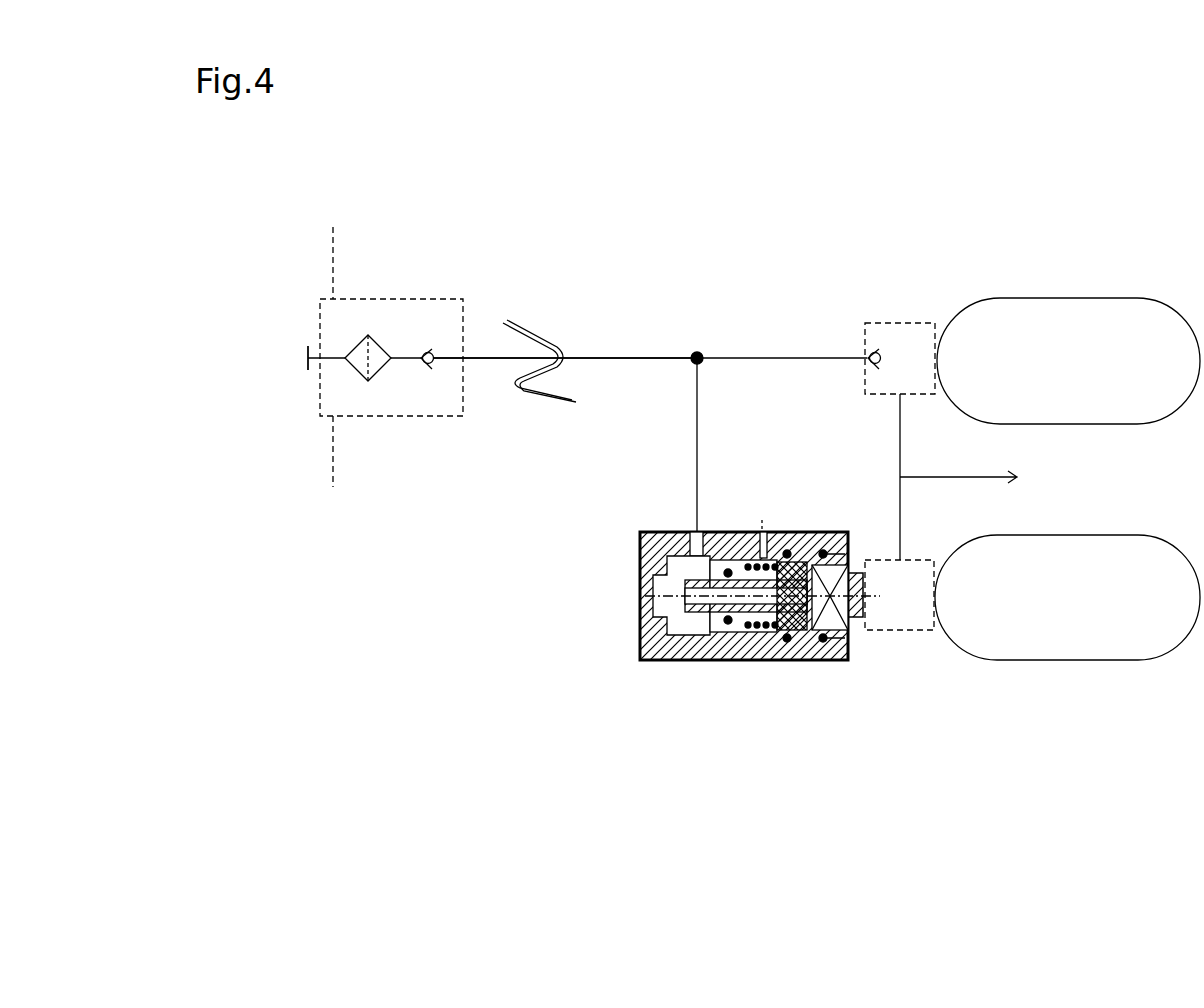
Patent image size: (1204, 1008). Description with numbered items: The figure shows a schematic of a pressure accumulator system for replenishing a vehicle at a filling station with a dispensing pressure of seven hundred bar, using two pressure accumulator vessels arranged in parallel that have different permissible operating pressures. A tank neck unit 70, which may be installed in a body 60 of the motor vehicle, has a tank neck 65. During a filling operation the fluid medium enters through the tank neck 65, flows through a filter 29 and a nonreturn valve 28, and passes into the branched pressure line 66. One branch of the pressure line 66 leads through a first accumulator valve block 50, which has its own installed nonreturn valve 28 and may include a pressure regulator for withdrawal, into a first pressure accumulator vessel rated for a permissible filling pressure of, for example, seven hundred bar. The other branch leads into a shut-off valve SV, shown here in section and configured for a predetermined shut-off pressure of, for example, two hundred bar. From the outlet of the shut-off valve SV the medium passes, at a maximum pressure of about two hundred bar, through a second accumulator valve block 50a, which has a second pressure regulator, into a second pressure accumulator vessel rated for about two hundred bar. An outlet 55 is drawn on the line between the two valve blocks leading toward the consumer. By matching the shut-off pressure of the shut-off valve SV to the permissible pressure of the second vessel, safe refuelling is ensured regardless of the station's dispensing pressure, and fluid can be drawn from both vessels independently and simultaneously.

The nonreturn valve 28 is at (428, 342).
The filter 29 is at (379, 333).
The first accumulator valve block 50 is at (900, 323).
The second accumulator valve block 50a is at (897, 630).
The outlet to consumer 55 is at (982, 478).
The body 60 is at (332, 460).
The tank neck 65 is at (301, 344).
The branched pressure line 66 is at (497, 358).
The tank neck unit 70 is at (427, 418).
The shut-off valve SV is at (748, 664).